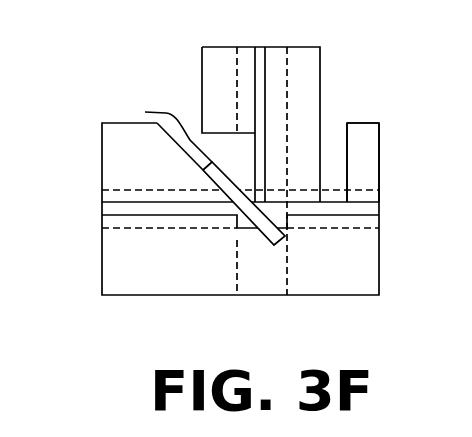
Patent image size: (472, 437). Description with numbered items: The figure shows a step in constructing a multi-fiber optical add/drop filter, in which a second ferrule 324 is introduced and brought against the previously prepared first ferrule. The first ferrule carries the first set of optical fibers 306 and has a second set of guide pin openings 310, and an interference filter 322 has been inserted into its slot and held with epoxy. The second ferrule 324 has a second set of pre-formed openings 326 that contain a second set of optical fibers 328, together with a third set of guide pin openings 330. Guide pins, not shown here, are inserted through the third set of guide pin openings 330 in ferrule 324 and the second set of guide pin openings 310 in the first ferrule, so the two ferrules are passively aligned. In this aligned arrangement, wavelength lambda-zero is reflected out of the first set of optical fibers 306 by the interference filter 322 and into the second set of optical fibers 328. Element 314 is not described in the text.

The first set of optical fibers 306 is at (102, 207).
The second set of guide pin openings 310 is at (268, 262).
The right block 314 is at (322, 88).
The interference filter 322 is at (145, 128).
The ferrule 324 is at (292, 171).
The second set of pre-formed openings 326 is at (272, 47).
The second set of optical fibers 328 is at (255, 46).
The third set of guide pin openings 330 is at (236, 87).